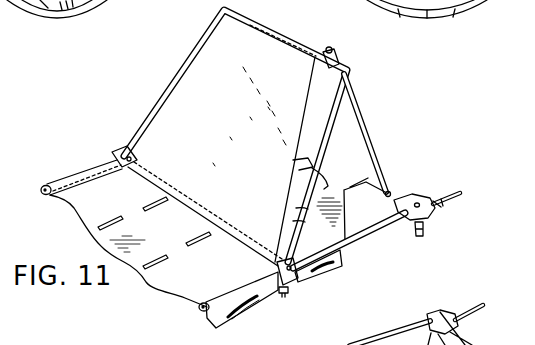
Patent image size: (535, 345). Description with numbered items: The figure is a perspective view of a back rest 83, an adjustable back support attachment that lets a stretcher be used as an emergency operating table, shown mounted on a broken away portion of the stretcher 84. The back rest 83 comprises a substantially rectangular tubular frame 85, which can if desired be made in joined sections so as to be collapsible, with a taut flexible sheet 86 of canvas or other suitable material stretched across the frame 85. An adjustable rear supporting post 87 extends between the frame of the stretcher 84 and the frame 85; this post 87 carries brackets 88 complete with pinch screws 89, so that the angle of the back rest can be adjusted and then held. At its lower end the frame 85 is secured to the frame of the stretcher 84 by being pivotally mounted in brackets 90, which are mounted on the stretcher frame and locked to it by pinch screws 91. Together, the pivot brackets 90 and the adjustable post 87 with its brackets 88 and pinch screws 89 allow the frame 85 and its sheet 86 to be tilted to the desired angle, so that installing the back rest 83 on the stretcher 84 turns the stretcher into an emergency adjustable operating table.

The back rest 83 is at (246, 170).
The stretcher 84 is at (73, 176).
The tubular frame 85 is at (186, 54).
The flexible sheet 86 is at (273, 63).
The adjustable rear supporting post 87 is at (369, 137).
The brackets 88 is at (337, 58).
The pinch screws 89 is at (331, 49).
The brackets 90 is at (115, 152).
The pinch screws 91 is at (286, 297).